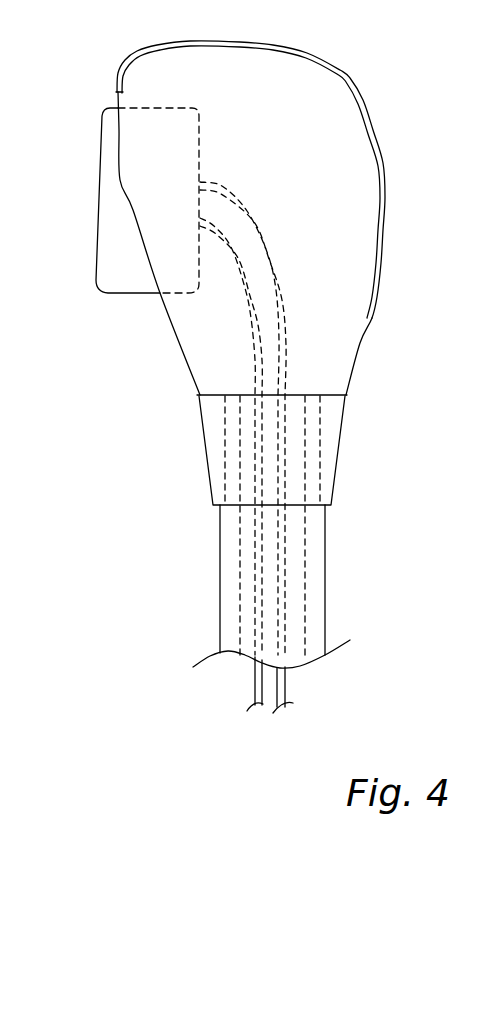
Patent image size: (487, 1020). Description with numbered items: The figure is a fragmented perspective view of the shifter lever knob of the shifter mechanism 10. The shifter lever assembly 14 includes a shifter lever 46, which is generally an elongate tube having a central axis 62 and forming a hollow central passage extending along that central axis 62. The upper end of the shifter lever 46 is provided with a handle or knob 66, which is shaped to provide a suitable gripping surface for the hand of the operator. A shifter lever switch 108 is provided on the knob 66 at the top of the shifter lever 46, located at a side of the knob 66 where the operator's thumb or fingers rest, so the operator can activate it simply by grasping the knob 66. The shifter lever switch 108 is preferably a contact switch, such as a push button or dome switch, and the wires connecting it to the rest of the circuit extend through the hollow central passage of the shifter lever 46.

The shifter mechanism 10 is at (393, 193).
The shifter lever switch 108 is at (96, 268).
The knob 66 is at (360, 343).
The shifter lever assembly 14 is at (326, 557).
The shifter lever 46 is at (326, 603).
The central axis 62 is at (238, 634).